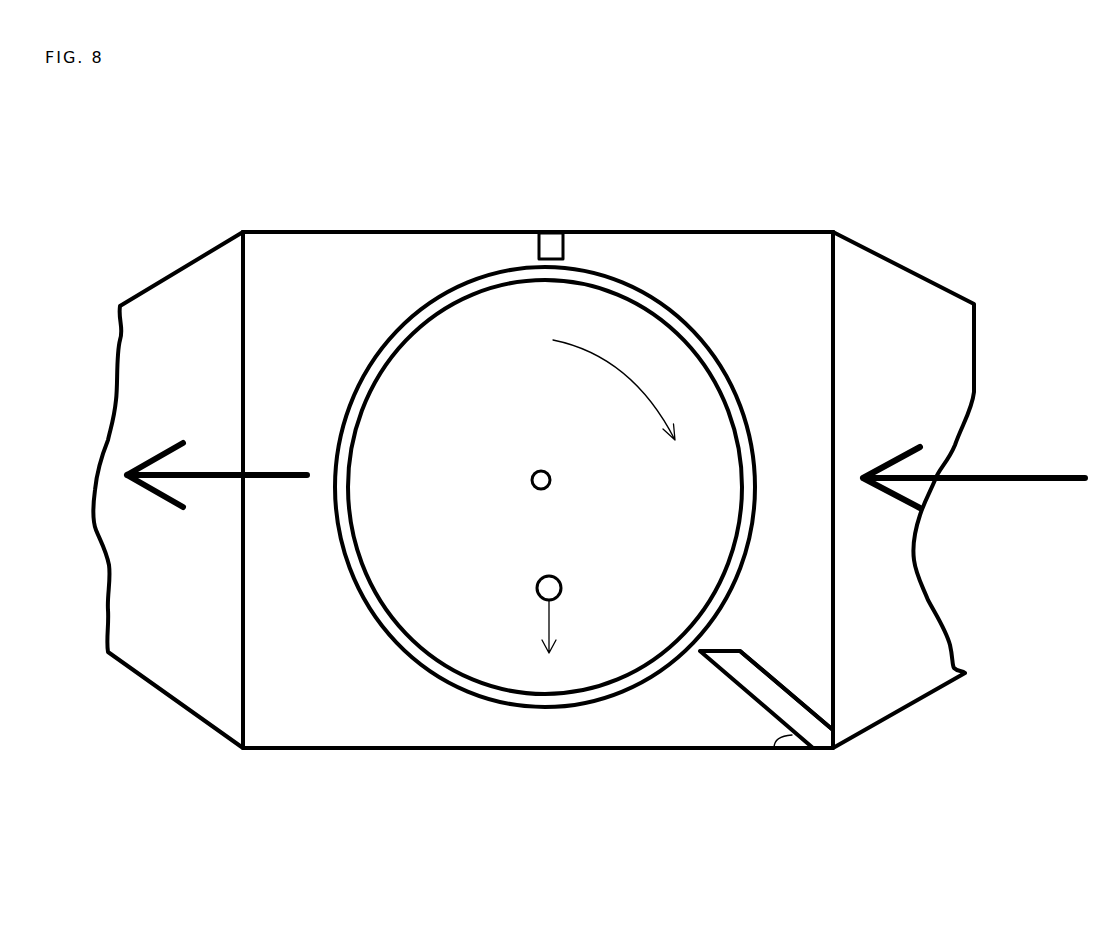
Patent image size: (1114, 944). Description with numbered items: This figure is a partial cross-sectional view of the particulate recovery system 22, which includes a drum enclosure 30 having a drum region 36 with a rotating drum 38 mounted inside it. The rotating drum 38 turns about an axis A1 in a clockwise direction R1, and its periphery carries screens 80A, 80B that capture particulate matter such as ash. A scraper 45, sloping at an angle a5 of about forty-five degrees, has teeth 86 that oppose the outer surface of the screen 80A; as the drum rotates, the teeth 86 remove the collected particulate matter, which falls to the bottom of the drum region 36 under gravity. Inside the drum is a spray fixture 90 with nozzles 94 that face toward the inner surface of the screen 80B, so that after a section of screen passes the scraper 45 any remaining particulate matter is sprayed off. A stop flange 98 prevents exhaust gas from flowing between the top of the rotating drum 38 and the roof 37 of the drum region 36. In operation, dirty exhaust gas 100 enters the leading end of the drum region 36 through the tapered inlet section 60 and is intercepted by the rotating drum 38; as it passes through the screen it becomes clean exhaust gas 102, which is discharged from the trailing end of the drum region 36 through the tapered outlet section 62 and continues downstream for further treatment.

The particulate recovery system 22 is at (722, 148).
The drum enclosure 30 is at (291, 190).
The drum region 36 is at (348, 231).
The roof 37 is at (411, 231).
The rotating drum 38 is at (625, 253).
The tapered inlet section 60 is at (888, 313).
The tapered outlet section 62 is at (186, 298).
The screen 80A is at (687, 322).
The screen 80B is at (708, 368).
The teeth 86 is at (698, 655).
The spray fixture 90 is at (561, 581).
The nozzles 94 is at (549, 620).
The stop flange 98 is at (539, 237).
The dirty exhaust gas 100 is at (1004, 473).
The clean exhaust gas 102 is at (221, 470).
The scraper 45 is at (775, 698).
The axis A1 is at (531, 474).
The clockwise direction R1 is at (614, 390).
The angle a5 is at (771, 751).